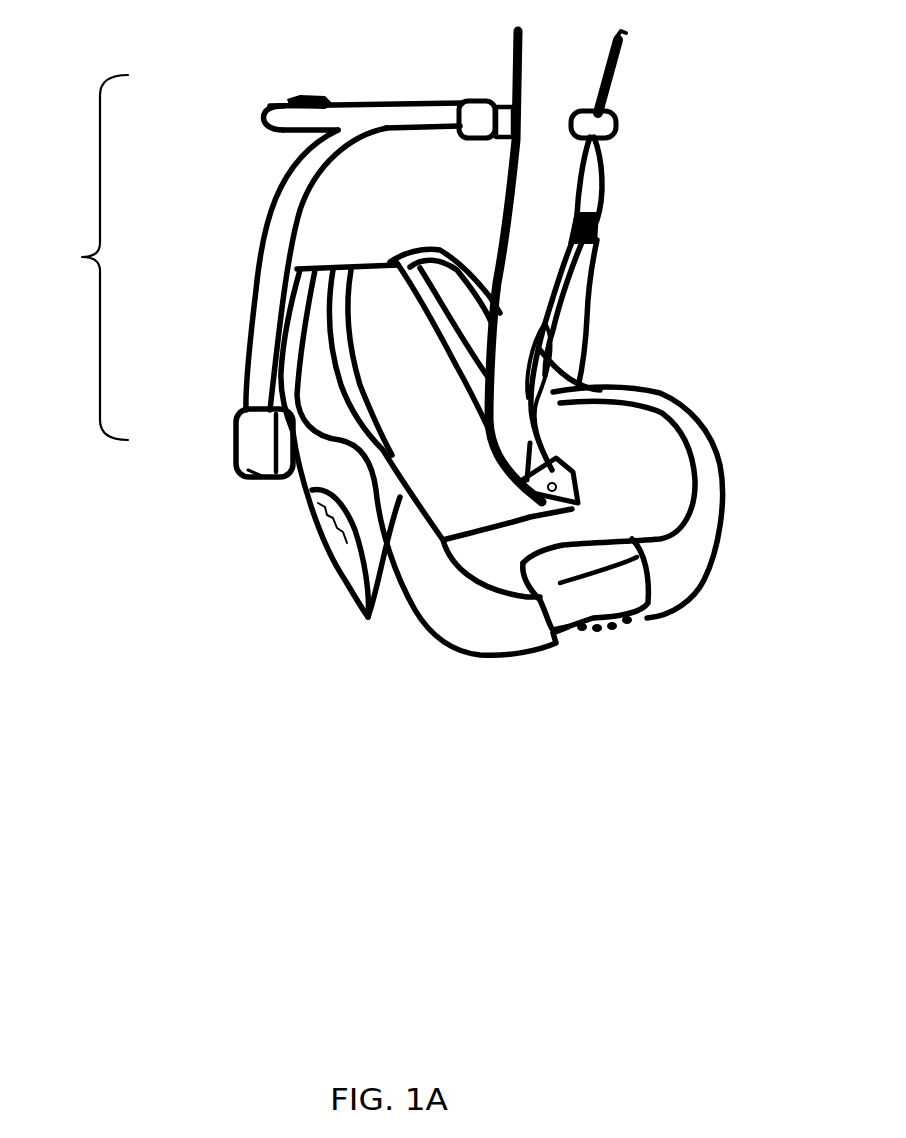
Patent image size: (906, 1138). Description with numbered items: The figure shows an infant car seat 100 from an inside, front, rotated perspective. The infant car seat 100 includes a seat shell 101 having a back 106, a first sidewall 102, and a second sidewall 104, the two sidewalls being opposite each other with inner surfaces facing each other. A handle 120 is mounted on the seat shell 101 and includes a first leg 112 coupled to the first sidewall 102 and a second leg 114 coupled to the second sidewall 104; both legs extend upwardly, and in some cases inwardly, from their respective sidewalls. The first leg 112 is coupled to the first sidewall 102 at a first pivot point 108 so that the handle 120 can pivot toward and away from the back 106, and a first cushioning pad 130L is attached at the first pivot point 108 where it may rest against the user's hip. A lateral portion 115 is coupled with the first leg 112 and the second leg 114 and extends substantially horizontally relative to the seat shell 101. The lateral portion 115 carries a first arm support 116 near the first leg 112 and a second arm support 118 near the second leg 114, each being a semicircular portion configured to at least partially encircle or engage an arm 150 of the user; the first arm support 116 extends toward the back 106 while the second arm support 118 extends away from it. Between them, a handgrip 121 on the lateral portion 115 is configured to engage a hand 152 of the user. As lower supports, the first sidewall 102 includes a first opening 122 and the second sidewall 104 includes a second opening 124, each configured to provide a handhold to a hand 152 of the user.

The infant car seat 100 is at (663, 1013).
The seat shell 101 is at (333, 537).
The first sidewall 102 is at (355, 588).
The second sidewall 104 is at (663, 388).
The back 106 is at (357, 261).
The first pivot point 108 is at (245, 483).
The first leg 112 is at (247, 297).
The second leg 114 is at (587, 283).
The lateral portion 115 is at (403, 103).
The first arm support 116 is at (267, 107).
The second arm support 118 is at (617, 124).
The handle 120 is at (75, 257).
The handgrip 121 is at (478, 118).
The first opening 122 is at (317, 520).
The second opening 124 is at (547, 473).
The first cushioning pad 130L is at (235, 437).
The arm 150 is at (620, 50).
The hand 152 is at (510, 422).